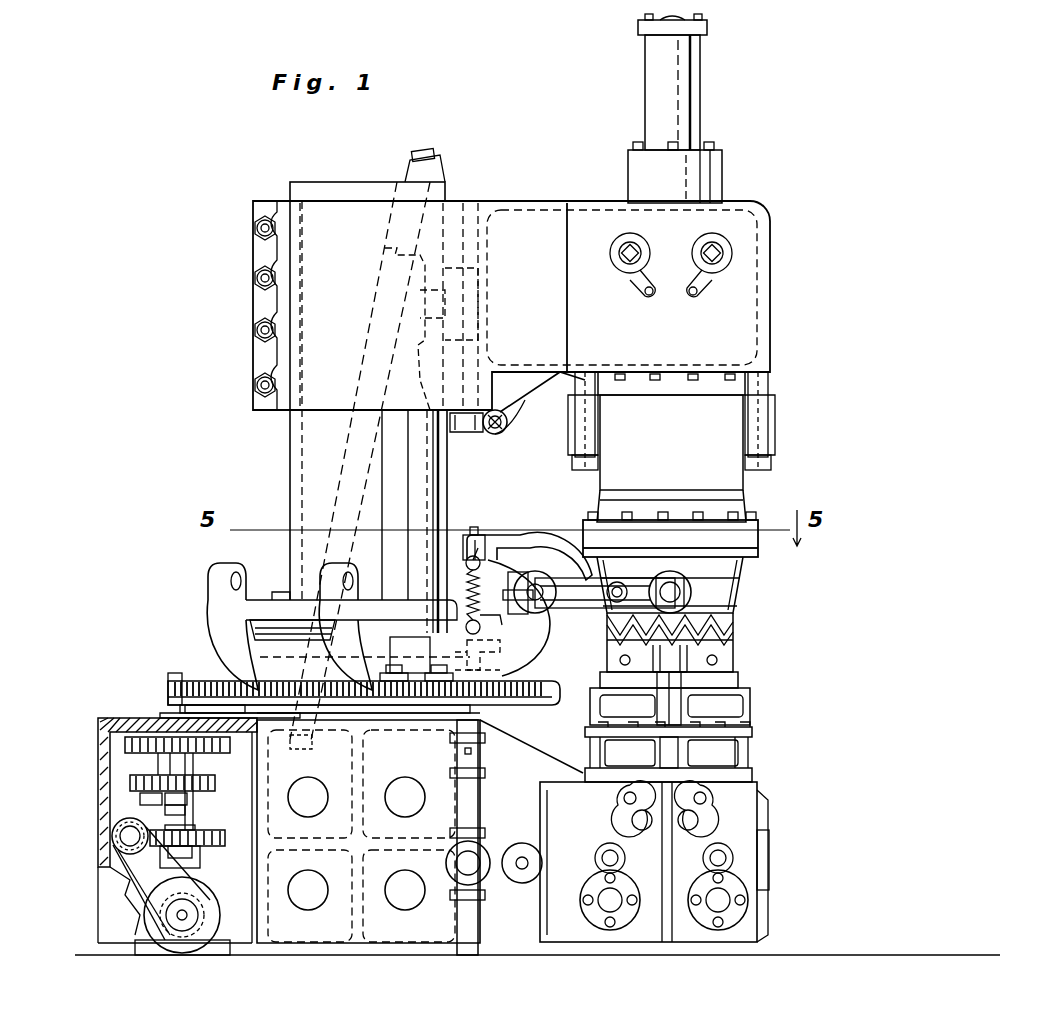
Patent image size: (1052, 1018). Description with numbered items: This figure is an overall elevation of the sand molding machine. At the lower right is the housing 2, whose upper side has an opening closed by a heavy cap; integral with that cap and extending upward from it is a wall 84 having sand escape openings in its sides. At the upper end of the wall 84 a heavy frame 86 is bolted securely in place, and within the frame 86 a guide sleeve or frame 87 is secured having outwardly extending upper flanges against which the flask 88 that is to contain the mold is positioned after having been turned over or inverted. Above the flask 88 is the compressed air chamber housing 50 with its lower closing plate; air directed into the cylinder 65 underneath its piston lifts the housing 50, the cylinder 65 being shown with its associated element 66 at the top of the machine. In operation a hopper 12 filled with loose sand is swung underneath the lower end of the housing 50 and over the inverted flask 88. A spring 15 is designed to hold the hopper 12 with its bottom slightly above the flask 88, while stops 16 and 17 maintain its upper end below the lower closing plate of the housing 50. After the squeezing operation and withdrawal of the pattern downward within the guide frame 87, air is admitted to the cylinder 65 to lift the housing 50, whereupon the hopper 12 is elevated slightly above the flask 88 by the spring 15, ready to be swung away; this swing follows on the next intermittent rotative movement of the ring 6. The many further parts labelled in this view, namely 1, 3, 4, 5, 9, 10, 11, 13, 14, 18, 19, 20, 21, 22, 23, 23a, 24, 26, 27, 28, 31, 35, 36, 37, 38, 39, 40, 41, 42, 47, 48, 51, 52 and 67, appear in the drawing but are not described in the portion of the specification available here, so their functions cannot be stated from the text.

The housing 1 is at (300, 930).
The housing 2 is at (648, 930).
The bearing 3 is at (447, 790).
The shaft 4 is at (472, 752).
The column 5 is at (440, 478).
The ring 6 is at (410, 620).
The hook 9 is at (235, 615).
The band 10 is at (575, 570).
The link 11 is at (540, 600).
The hopper 12 is at (745, 578).
The fork 13 is at (672, 585).
The arm 14 is at (502, 548).
The spring 15 is at (491, 656).
The stop 16 is at (500, 622).
The stop 17 is at (491, 591).
The rack 18 is at (505, 693).
The gear 19 is at (200, 680).
The plate 20 is at (180, 712).
The gear housing 21 is at (100, 732).
The pulley 22 is at (187, 945).
The bracket 23 is at (172, 935).
The belt 23a is at (118, 845).
The pulley 24 is at (112, 836).
The bearing 26 is at (220, 848).
The gear 27 is at (205, 826).
The collar 28 is at (185, 808).
The clutch 31 is at (135, 792).
The gear 35 is at (150, 765).
The gear 36 is at (140, 737).
The shaft 37 is at (222, 755).
The bearing 38 is at (175, 680).
The rod 39 is at (355, 485).
The slide 40 is at (395, 245).
The head 41 is at (525, 225).
The bolt 42 is at (258, 236).
The bracket 47 is at (468, 432).
The disc 48 is at (500, 433).
The compressed air chamber housing 50 is at (735, 490).
The flange 51 is at (672, 380).
The ring 52 is at (757, 545).
The cylinder 65 is at (695, 92).
The block 66 is at (705, 178).
The tie rod 67 is at (580, 378).
The wall 84 is at (752, 752).
The frame 86 is at (750, 708).
The guide sleeve 87 is at (742, 685).
The flask 88 is at (735, 662).